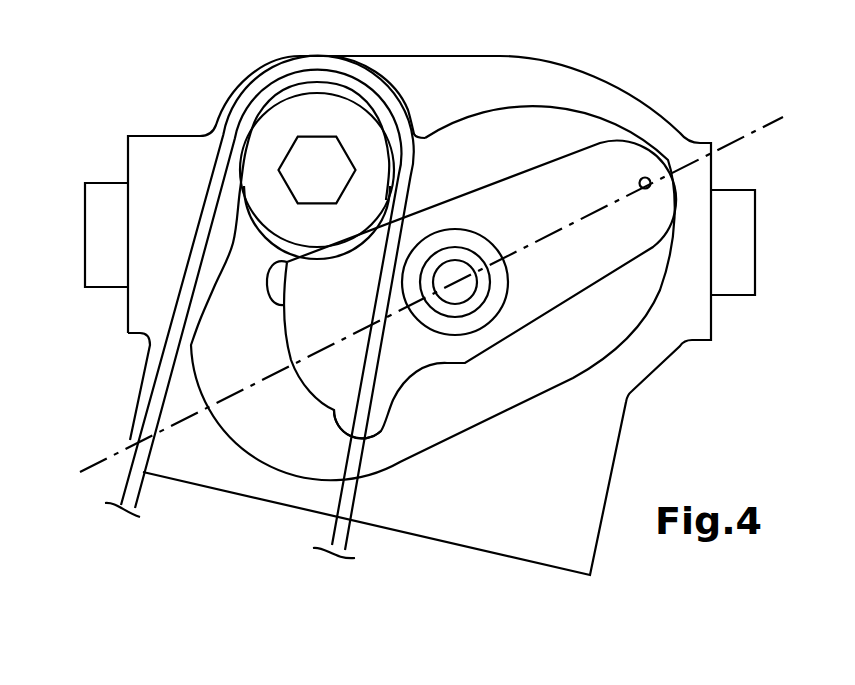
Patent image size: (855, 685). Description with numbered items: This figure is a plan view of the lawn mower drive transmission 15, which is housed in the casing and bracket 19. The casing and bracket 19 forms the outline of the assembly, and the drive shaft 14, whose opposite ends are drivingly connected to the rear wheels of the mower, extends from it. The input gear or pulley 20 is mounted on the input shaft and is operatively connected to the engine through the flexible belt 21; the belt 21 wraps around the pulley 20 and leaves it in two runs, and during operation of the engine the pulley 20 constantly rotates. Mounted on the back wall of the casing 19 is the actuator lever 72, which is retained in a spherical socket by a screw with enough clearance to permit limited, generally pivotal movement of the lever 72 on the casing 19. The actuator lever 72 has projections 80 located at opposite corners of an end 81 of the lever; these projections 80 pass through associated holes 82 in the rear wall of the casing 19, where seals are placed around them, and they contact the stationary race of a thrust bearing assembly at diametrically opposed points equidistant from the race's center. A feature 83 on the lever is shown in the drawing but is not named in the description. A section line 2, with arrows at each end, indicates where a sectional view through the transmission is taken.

The section line 2- 2 is at (82, 470).
The drive shaft 14 is at (753, 240).
The drive transmission 15 is at (87, 231).
The casing and bracket 19 is at (590, 455).
The input gear or pulley 20 is at (313, 108).
The flexible belt 21 is at (345, 537).
The actuator lever 72 is at (508, 197).
The projections 80 is at (281, 277).
The end of the actuator lever 81 is at (283, 338).
The holes 82 is at (267, 297).
The hole 83 is at (682, 133).